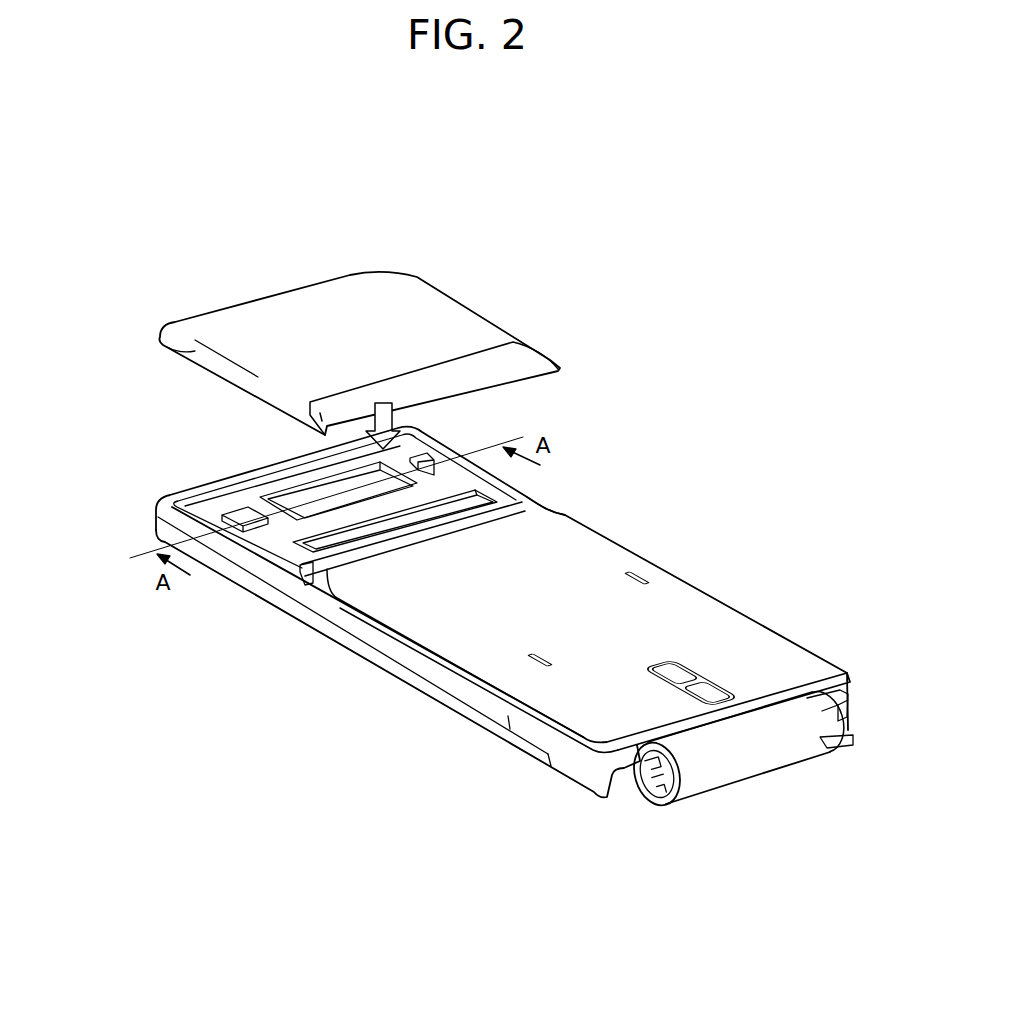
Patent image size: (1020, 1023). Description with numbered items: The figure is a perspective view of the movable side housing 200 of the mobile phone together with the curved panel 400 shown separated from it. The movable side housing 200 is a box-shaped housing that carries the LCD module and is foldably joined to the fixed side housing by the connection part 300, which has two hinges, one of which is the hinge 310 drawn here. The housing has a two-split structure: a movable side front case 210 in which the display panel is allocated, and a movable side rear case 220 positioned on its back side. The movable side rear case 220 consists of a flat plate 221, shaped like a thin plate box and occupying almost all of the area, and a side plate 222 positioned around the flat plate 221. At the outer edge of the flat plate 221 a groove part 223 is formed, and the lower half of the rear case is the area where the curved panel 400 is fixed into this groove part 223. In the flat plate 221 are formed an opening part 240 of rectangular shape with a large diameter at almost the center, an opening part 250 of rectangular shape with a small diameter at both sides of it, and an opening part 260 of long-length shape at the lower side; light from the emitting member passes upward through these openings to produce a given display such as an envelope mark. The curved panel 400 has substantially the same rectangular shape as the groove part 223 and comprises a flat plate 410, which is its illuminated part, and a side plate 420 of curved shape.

The movable side housing 200 is at (763, 627).
The movable side front case 210 is at (367, 658).
The movable side rear case 220 is at (615, 542).
The flat plate 221 is at (452, 488).
The side plate 222 is at (508, 733).
The groove part 223 is at (185, 509).
The opening part 240 is at (290, 496).
The opening part 250 is at (240, 508).
The opening part 260 is at (405, 521).
The connection part 300 is at (780, 741).
The hinge 310 is at (722, 765).
The curved panel 400 is at (458, 338).
The flat plate 410 is at (292, 308).
The side plate 420 is at (167, 347).